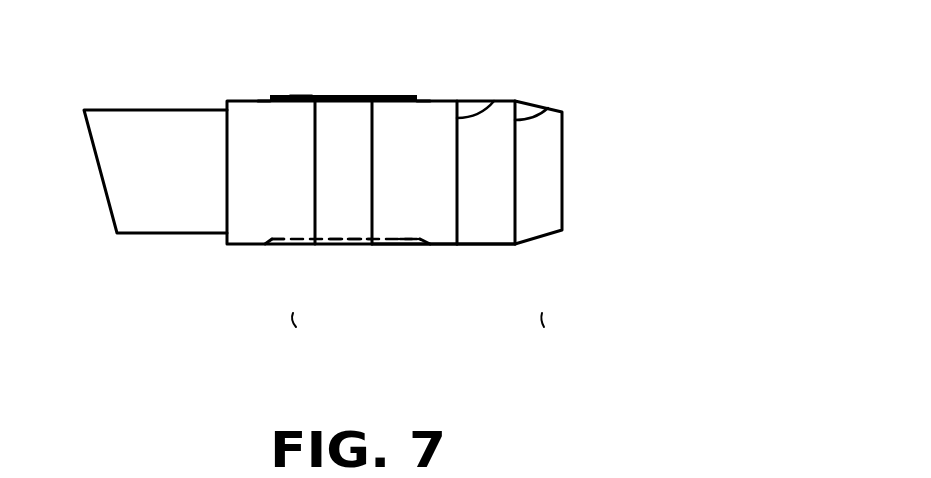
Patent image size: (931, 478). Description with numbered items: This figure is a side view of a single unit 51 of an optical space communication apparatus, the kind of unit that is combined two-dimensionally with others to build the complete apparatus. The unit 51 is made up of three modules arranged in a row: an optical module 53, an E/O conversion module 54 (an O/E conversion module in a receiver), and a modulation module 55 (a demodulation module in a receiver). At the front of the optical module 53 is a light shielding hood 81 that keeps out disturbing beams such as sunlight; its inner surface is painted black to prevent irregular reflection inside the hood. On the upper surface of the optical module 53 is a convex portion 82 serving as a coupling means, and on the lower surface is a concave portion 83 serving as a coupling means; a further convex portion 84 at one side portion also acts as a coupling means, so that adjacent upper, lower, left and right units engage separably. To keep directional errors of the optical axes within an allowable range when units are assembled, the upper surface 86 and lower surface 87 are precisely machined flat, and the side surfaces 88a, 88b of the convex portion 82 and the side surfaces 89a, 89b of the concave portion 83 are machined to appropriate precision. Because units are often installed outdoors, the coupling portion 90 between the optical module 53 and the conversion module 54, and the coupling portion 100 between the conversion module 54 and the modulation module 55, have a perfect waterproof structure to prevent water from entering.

The light shielding hood 81 is at (130, 130).
The unit 51 is at (226, 102).
The convex portion 82 is at (355, 96).
The side surface 88a is at (264, 99).
The side surface 88b is at (300, 98).
The convex portion 84 is at (350, 222).
The upper surface 86 is at (442, 101).
The coupling portion 90 is at (494, 101).
The coupling portion 100 is at (541, 112).
The modulation module 55 is at (550, 215).
The lower surface 87 is at (236, 247).
The concave portion 83 is at (302, 248).
The side surface 89a is at (262, 248).
The side surface 89b is at (400, 248).
The optical module 53 is at (450, 246).
The E/O conversion module 54 is at (498, 232).